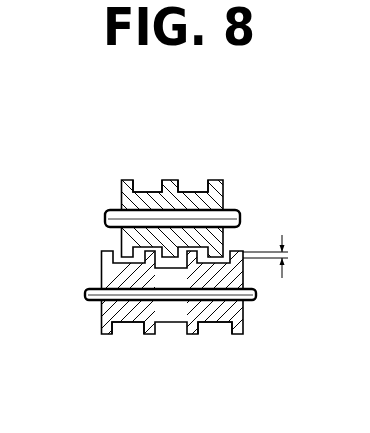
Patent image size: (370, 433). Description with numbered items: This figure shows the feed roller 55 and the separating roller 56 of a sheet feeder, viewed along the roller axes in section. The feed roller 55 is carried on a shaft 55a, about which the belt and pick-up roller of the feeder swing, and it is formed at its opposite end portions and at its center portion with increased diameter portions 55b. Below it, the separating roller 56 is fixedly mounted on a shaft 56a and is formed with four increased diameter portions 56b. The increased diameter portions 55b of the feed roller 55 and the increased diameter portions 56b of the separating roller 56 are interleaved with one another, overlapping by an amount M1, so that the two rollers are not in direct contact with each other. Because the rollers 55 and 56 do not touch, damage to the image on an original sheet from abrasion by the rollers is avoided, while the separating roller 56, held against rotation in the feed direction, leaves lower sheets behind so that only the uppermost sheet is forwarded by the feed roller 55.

The feed roller 55 is at (122, 198).
The shaft of the feed roller 55a is at (236, 210).
The increased diameter portions 55b is at (172, 178).
The separating roller 56 is at (102, 313).
The shaft 56a is at (88, 290).
The increased diameter portions 56b is at (235, 335).
The overlapping M1 is at (289, 256).